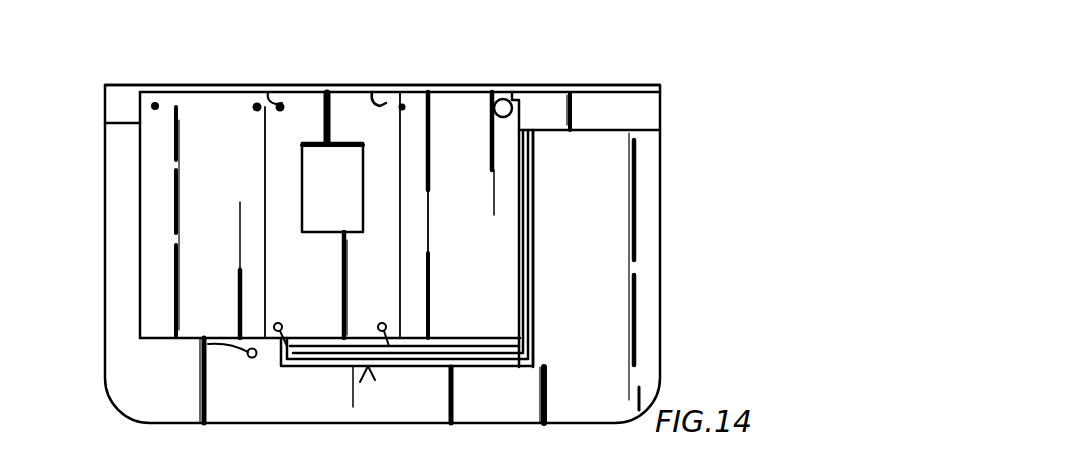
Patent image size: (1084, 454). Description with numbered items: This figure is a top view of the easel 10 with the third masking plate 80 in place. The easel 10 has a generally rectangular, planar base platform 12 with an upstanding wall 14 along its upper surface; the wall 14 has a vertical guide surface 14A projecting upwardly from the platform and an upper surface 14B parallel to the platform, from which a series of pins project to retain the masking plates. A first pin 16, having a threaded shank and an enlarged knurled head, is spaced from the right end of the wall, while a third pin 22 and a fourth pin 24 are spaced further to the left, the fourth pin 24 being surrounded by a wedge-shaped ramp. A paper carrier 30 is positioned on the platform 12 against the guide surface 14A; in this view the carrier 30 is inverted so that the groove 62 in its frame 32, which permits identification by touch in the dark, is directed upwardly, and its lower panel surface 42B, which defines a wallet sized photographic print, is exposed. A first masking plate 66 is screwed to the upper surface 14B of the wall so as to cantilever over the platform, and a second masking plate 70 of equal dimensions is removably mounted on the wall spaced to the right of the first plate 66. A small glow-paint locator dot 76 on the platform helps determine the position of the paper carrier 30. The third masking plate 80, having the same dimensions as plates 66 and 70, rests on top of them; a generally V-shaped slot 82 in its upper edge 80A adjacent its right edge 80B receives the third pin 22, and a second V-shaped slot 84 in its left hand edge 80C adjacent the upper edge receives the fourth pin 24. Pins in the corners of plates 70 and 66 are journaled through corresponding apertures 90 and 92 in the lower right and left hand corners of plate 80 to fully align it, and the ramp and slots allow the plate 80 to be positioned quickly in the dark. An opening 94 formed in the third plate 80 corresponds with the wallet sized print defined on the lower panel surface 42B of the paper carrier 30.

The easel 10 is at (517, 65).
The base platform 12 is at (124, 214).
The wall 14 is at (122, 90).
The vertical guide surface 14A is at (120, 125).
The upper surface 14B is at (125, 112).
The first pin 16 is at (503, 99).
The third pin 22 is at (383, 100).
The fourth pin 24 is at (280, 100).
The paper carrier 30 is at (460, 369).
The frame 32 is at (360, 373).
The lower panel surface 42B is at (533, 217).
The groove 62 is at (522, 270).
The first masking plate 66 is at (153, 272).
The second masking plate 70 is at (495, 317).
The locator dot 76 is at (200, 345).
The third masking plate 80 is at (283, 158).
The upper edge 80A is at (316, 92).
The right edge 80B is at (400, 232).
The left hand edge 80C is at (266, 245).
The V-shaped slot 82 is at (387, 101).
The second V-shaped slot 84 is at (257, 107).
The aperture 90 is at (375, 372).
The aperture 92 is at (286, 366).
The opening 94 is at (302, 185).